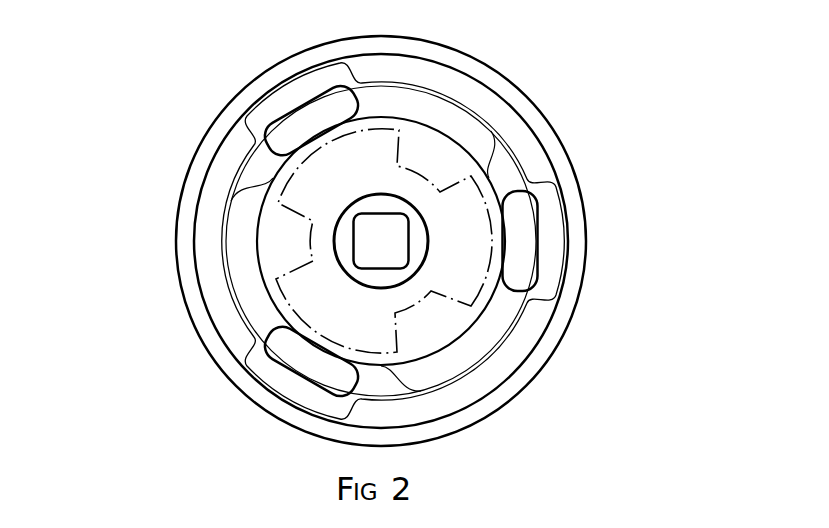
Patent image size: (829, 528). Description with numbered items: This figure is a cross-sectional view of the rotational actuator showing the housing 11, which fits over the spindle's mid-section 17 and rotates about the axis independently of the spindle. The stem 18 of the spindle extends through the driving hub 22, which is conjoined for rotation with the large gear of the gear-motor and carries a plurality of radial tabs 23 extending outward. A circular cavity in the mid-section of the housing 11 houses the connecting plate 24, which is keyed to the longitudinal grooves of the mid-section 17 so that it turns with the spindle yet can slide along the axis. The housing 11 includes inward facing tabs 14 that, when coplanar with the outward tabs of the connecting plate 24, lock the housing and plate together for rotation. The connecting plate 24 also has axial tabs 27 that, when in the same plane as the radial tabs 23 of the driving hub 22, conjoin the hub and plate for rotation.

The housing 11 is at (199, 173).
The inward facing tabs 14 is at (498, 117).
The mid-section 17 is at (443, 225).
The stem 18 is at (345, 237).
The driving hub 22 is at (442, 328).
The radial tabs 23 is at (243, 232).
The connecting plate 24 is at (498, 165).
The axial tabs 27 is at (320, 110).